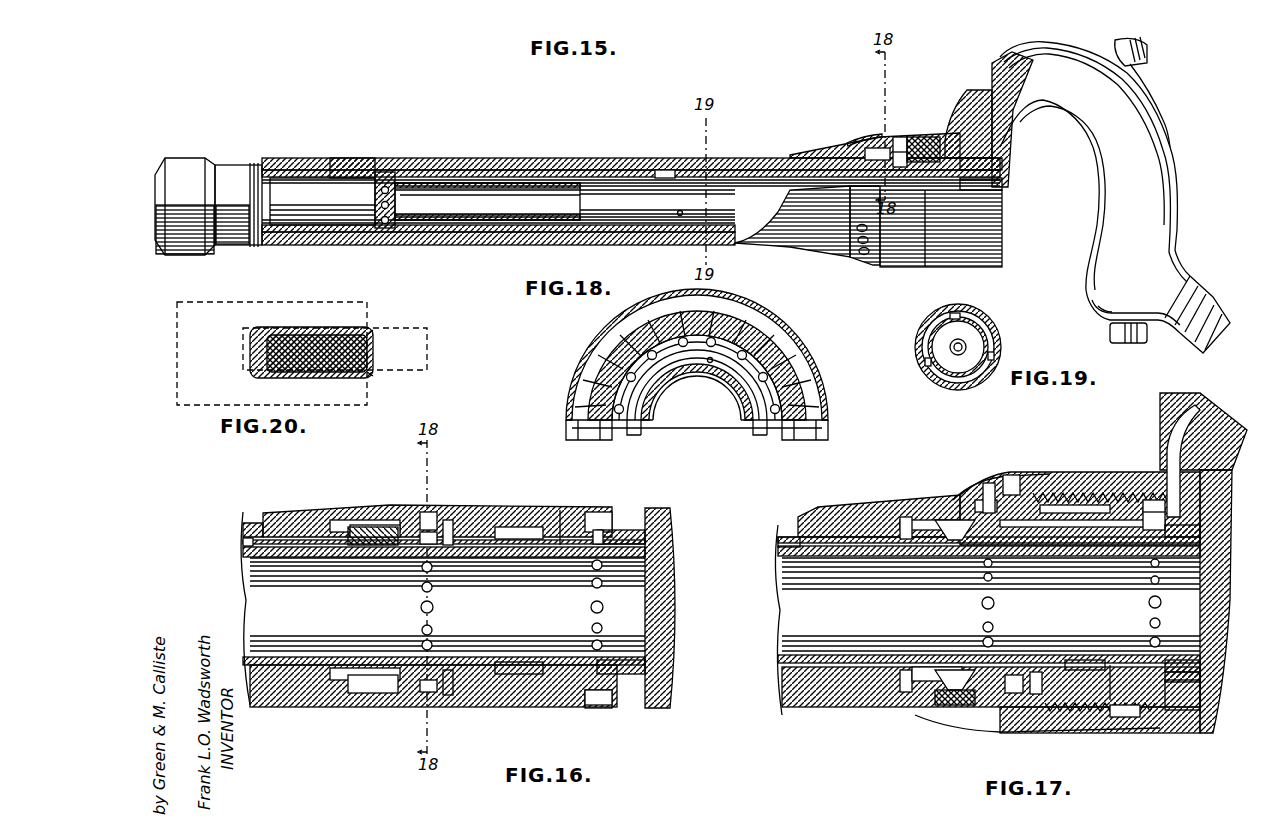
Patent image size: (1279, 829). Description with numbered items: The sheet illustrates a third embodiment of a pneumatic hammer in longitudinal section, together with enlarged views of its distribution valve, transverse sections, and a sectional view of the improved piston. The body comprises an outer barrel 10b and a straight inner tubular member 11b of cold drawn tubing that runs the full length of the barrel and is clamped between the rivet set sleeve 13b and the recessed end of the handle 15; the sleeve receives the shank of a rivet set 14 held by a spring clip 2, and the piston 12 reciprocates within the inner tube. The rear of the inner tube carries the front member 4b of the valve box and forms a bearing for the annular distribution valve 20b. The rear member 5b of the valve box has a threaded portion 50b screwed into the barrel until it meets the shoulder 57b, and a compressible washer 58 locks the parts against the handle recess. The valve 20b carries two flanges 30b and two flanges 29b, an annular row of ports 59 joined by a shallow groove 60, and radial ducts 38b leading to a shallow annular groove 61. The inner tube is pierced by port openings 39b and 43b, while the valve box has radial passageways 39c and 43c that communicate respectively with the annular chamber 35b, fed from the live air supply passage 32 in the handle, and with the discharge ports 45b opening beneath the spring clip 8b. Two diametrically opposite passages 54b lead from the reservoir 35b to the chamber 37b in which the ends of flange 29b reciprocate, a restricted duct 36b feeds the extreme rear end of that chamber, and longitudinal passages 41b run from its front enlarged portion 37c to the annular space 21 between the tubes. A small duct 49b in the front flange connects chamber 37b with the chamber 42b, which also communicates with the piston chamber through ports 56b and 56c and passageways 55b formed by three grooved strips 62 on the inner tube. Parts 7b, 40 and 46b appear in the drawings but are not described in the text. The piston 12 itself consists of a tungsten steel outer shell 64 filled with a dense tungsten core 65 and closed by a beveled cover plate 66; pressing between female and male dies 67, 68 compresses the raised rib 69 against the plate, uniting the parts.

In FIG. 15, the spring clip 2 is at (250, 160).
In FIG. 15, the front member of the valve box 4b is at (845, 168).
In FIG. 16, the front member of the valve box 4b is at (350, 515).
In FIG. 17, the front member of the valve box 4b is at (925, 672).
In FIG. 15, the rear member of the valve box 5b is at (995, 163).
In FIG. 18, the rear member of the valve box 5b is at (772, 428).
In FIG. 17, the rear member of the valve box 5b is at (1200, 673).
In FIG. 15, the vertical key 7b is at (898, 165).
In FIG. 17, the vertical key 7b is at (993, 485).
In FIG. 15, the spring clip 8b is at (900, 255).
In FIG. 18, the spring clip 8b is at (800, 358).
In FIG. 15, the outer barrel 10b is at (482, 168).
In FIG. 19, the outer barrel 10b is at (925, 332).
In FIG. 17, the outer barrel 10b is at (835, 522).
In FIG. 15, the inner tubular member 11b is at (615, 178).
In FIG. 18, the inner tubular member 11b is at (655, 425).
In FIG. 16, the inner tubular member 11b is at (290, 560).
In FIG. 17, the inner tubular member 11b is at (782, 552).
In FIG. 15, the piston 12 is at (530, 185).
In FIG. 15, the rivet set sleeve 13b is at (345, 170).
In FIG. 15, the rivet set 14 is at (290, 185).
In FIG. 15, the handle 15 is at (1010, 120).
In FIG. 16, the handle 15 is at (665, 585).
In FIG. 17, the handle 15 is at (1228, 567).
In FIG. 15, the annular distribution valve 20b is at (960, 183).
In FIG. 18, the annular distribution valve 20b is at (755, 428).
In FIG. 16, the annular distribution valve 20b is at (480, 560).
In FIG. 17, the annular distribution valve 20b is at (1035, 565).
In FIG. 15, the annular space 21 is at (428, 172).
In FIG. 17, the annular space 21 is at (880, 560).
In FIG. 16, the rear flanges 29b is at (510, 672).
In FIG. 17, the rear flanges 29b is at (1090, 565).
In FIG. 16, the front flanges 30b is at (405, 672).
In FIG. 17, the front flanges 30b is at (950, 560).
In FIG. 15, the live air supply passage 32 is at (1005, 78).
In FIG. 17, the live air supply passage 32 is at (1205, 418).
In FIG. 15, the annular chamber 35b is at (945, 120).
In FIG. 16, the annular chamber 35b is at (600, 518).
In FIG. 17, the annular chamber 35b is at (1150, 512).
In FIG. 16, the restricted duct 36b is at (530, 560).
In FIG. 17, the restricted duct 36b is at (1075, 492).
In FIG. 17, the chamber 37b is at (1012, 477).
In FIG. 16, the front enlarged portion of the chamber 37c is at (450, 518).
In FIG. 17, the front enlarged portion of the chamber 37c is at (1038, 670).
In FIG. 16, the radial ducts 38b is at (500, 655).
In FIG. 17, the radial ducts 38b is at (1065, 680).
In FIG. 16, the port openings 39b is at (605, 560).
In FIG. 17, the port openings 39b is at (1160, 580).
In FIG. 16, the radial passageways 39c is at (610, 700).
In FIG. 17, the radial passageways 39c is at (1165, 505).
In FIG. 15, the collar with balls 40 is at (381, 218).
In FIG. 18, the longitudinal passages 41b is at (674, 330).
In FIG. 16, the longitudinal passages 41b is at (395, 708).
In FIG. 17, the longitudinal passages 41b is at (905, 525).
In FIG. 15, the chamber 42b is at (855, 180).
In FIG. 17, the chamber 42b is at (950, 672).
In FIG. 18, the port openings 43b is at (728, 384).
In FIG. 16, the port openings 43b is at (435, 660).
In FIG. 17, the port openings 43b is at (1045, 565).
In FIG. 18, the radial passageways 43c is at (795, 405).
In FIG. 16, the radial passageways 43c is at (425, 518).
In FIG. 17, the radial passageways 43c is at (975, 490).
In FIG. 15, the discharge ports 45b is at (880, 155).
In FIG. 18, the discharge ports 45b is at (775, 355).
In FIG. 17, the discharge ports 45b is at (985, 510).
In FIG. 15, the ring 46b is at (856, 252).
In FIG. 17, the ring 46b is at (985, 730).
In FIG. 18, the small duct 49b is at (712, 358).
In FIG. 16, the small duct 49b is at (385, 558).
In FIG. 17, the small duct 49b is at (1035, 560).
In FIG. 17, the threaded portion 50b is at (1140, 715).
In FIG. 15, the passages 54b is at (925, 160).
In FIG. 16, the passages 54b is at (520, 520).
In FIG. 17, the passages 54b is at (1110, 500).
In FIG. 15, the passageways 55b is at (750, 172).
In FIG. 19, the passageways 55b is at (985, 318).
In FIG. 16, the passageways 55b is at (265, 520).
In FIG. 17, the passageways 55b is at (830, 560).
In FIG. 15, the port 56b is at (678, 212).
In FIG. 16, the port 56c is at (318, 515).
In FIG. 17, the port 56c is at (920, 560).
In FIG. 16, the shoulder 57b is at (380, 520).
In FIG. 17, the shoulder 57b is at (955, 708).
In FIG. 16, the compressible washer 58 is at (648, 538).
In FIG. 17, the compressible washer 58 is at (1200, 530).
In FIG. 18, the ports 59 is at (630, 430).
In FIG. 16, the ports 59 is at (418, 560).
In FIG. 17, the ports 59 is at (980, 548).
In FIG. 18, the shallow groove 60 is at (645, 428).
In FIG. 16, the shallow groove 60 is at (415, 560).
In FIG. 17, the shallow groove 60 is at (983, 668).
In FIG. 16, the shallow annular groove 61 is at (560, 508).
In FIG. 17, the shallow annular groove 61 is at (1112, 668).
In FIG. 15, the grooved strips 62 is at (667, 170).
In FIG. 19, the grooved strips 62 is at (958, 316).
In FIG. 16, the grooved strips 62 is at (248, 540).
In FIG. 17, the grooved strips 62 is at (788, 540).
In FIG. 20, the outer shell 64 is at (262, 341).
In FIG. 20, the core 65 is at (260, 365).
In FIG. 20, the cover piece 66 is at (370, 358).
In FIG. 20, the female die 67 is at (333, 305).
In FIG. 20, the male die 68 is at (418, 330).
In FIG. 20, the raised rib 69 is at (368, 335).